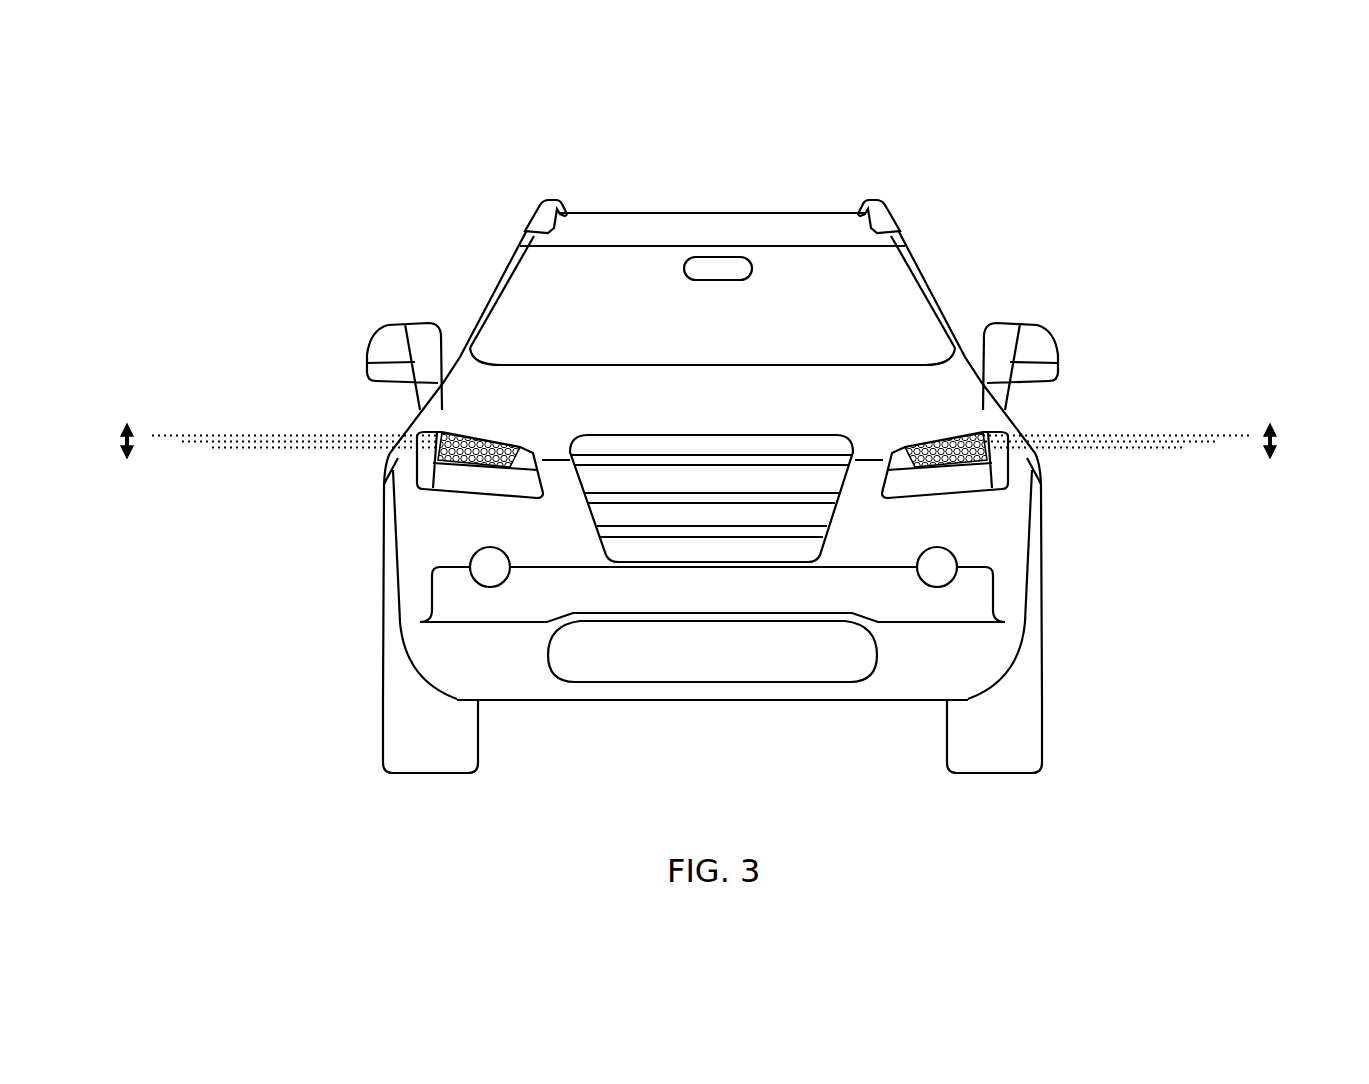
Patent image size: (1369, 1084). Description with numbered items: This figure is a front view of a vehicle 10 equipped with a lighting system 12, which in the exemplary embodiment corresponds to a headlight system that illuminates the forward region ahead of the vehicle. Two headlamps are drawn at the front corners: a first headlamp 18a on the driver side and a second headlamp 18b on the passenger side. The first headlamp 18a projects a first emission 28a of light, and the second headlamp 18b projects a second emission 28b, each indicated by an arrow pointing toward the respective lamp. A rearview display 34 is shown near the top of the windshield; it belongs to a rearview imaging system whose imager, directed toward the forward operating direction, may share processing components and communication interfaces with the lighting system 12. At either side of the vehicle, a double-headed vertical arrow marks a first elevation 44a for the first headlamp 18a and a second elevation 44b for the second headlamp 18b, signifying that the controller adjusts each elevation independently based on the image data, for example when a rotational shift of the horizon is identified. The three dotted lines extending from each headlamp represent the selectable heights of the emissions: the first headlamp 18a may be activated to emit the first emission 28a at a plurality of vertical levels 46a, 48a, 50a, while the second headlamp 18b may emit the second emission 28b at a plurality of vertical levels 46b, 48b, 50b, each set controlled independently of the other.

The vehicle 10 is at (700, 458).
The lighting system 12 is at (700, 458).
The first headlamp 18a is at (1000, 473).
The second headlamp 18b is at (425, 472).
The first emission 28a is at (1080, 517).
The second emission 28b is at (328, 538).
The rearview display 34 is at (728, 268).
The first elevation 44a is at (1277, 437).
The second elevation 44b is at (118, 437).
The vertical level 46a is at (1122, 447).
The vertical level 46b is at (322, 447).
The vertical level 48a is at (1163, 442).
The vertical level 48b is at (247, 442).
The vertical level 50a is at (1210, 436).
The vertical level 50b is at (170, 436).